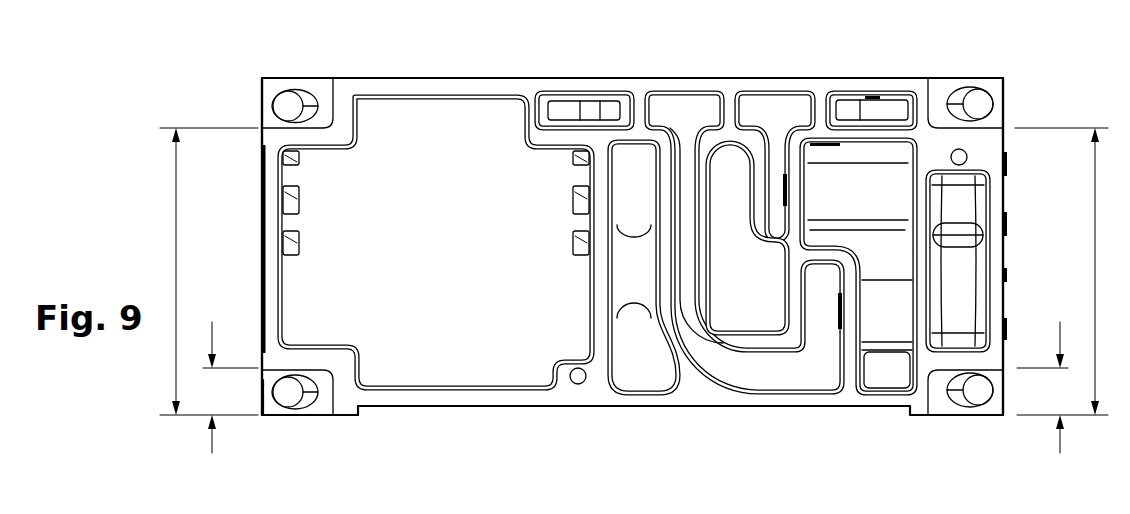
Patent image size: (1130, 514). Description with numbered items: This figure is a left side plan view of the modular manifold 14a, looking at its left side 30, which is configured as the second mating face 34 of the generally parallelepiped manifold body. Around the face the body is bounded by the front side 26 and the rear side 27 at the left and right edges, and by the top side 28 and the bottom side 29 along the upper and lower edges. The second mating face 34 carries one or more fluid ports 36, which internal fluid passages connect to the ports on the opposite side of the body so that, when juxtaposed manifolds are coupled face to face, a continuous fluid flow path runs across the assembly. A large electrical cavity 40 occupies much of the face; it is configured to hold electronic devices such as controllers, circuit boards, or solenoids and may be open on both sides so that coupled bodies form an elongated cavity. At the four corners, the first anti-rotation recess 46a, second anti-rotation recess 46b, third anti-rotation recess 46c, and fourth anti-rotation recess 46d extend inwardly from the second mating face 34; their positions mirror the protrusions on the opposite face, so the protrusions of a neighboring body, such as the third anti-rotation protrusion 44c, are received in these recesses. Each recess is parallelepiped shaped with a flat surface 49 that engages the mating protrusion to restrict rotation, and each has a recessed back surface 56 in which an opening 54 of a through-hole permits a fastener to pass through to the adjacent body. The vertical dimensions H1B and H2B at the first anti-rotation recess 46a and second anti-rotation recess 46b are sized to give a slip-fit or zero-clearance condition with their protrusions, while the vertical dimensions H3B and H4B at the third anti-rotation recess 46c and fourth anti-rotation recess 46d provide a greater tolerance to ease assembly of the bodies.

The modular manifold 14a is at (195, 42).
The third anti-rotation protrusion 44c is at (257, 10).
The front side 26 is at (1005, 106).
The rear side 27 is at (262, 103).
The top side 28 is at (807, 78).
The bottom side 29 is at (670, 410).
The left side 30 is at (593, 392).
The second mating face 34 is at (730, 75).
The fluid ports 36 is at (757, 303).
The electrical cavity 40 is at (451, 264).
The first anti-rotation recess 46a is at (944, 85).
The second anti-rotation recess 46b is at (333, 425).
The third anti-rotation recess 46c is at (995, 418).
The fourth anti-rotation recess 46d is at (265, 88).
The flat surface 49 is at (322, 127).
The opening 54 is at (310, 417).
The recessed back surface 56 is at (270, 407).
The vertical dimension H1B is at (1065, 271).
The vertical dimension H2B is at (224, 387).
The vertical dimension H3B is at (1047, 387).
The vertical dimension H4B is at (204, 271).